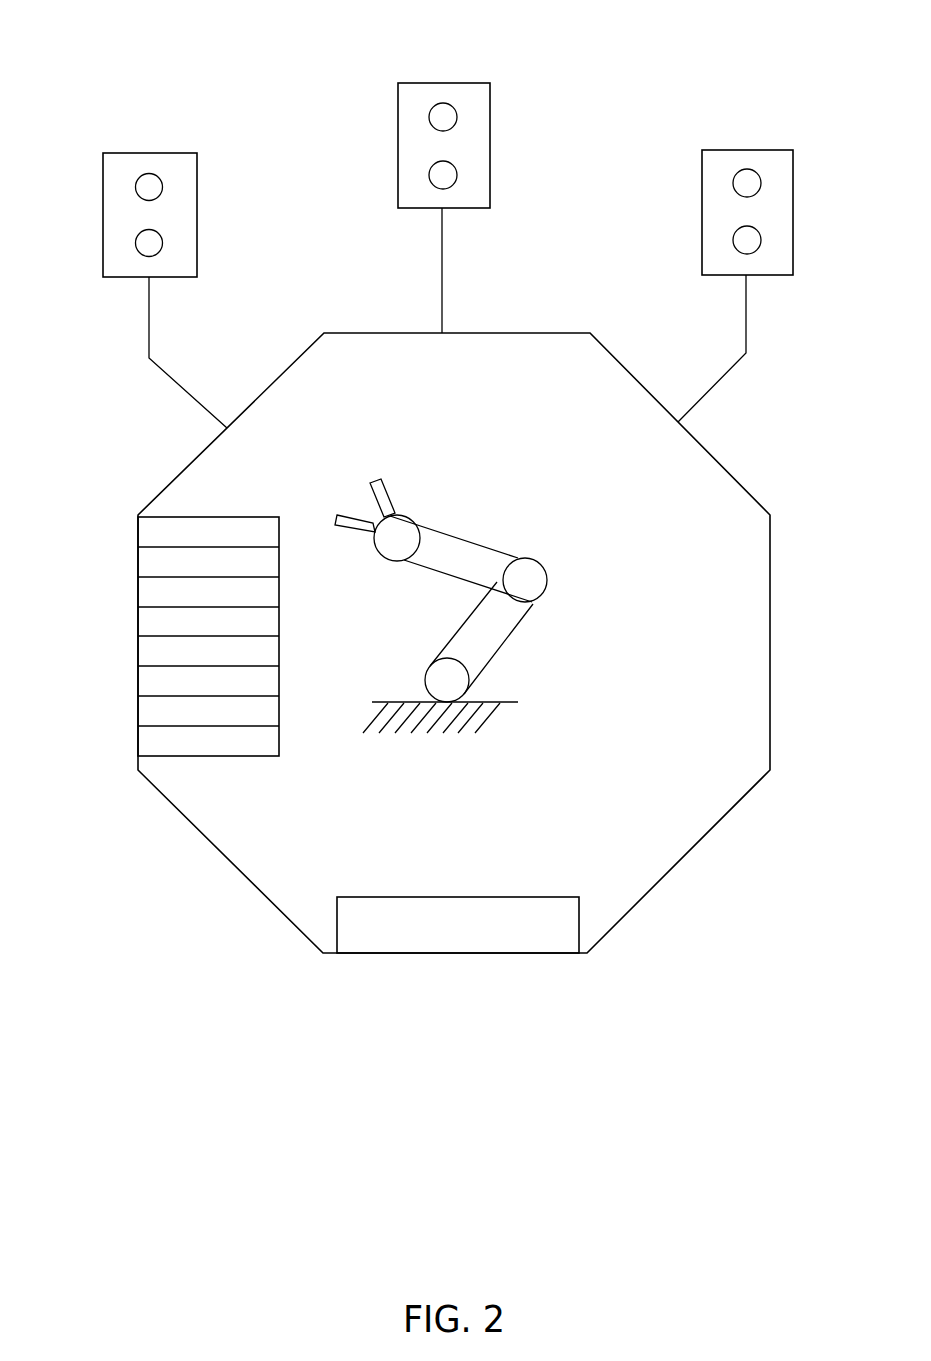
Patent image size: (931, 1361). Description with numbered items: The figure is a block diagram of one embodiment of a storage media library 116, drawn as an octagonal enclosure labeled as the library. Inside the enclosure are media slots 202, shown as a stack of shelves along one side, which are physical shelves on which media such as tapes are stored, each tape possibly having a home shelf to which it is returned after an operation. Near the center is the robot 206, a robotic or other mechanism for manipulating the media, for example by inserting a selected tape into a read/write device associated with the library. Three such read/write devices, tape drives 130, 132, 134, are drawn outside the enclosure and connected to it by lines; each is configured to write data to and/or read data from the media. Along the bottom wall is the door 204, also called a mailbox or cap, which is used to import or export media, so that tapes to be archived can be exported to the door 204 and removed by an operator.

The storage media library 116 is at (667, 872).
The tape drive 130 is at (173, 152).
The tape drive 132 is at (458, 80).
The tape drive 134 is at (777, 148).
The media slots 202 is at (138, 615).
The door 204 is at (472, 953).
The robot 206 is at (516, 629).